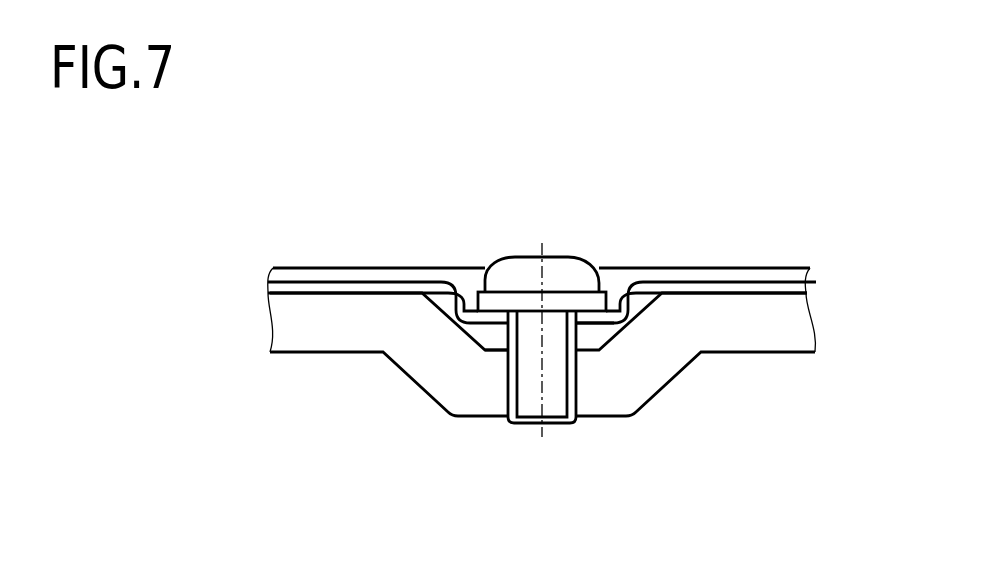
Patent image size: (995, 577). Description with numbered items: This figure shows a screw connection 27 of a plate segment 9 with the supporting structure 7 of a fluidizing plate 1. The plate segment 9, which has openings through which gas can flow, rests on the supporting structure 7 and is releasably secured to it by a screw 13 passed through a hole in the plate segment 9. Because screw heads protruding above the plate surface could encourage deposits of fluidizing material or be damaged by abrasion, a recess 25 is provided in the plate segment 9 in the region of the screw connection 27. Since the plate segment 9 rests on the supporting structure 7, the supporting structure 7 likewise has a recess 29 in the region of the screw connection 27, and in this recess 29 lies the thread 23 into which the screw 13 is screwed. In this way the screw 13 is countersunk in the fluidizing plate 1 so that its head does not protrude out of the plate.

The fluidizing plate 1 is at (320, 243).
The supporting structure 7 is at (768, 327).
The plate segment 9 is at (722, 275).
The screw 13 is at (558, 270).
The thread 23 is at (507, 390).
The recess 25 is at (606, 325).
The screw connection 27 is at (510, 246).
The recess 29 is at (497, 346).